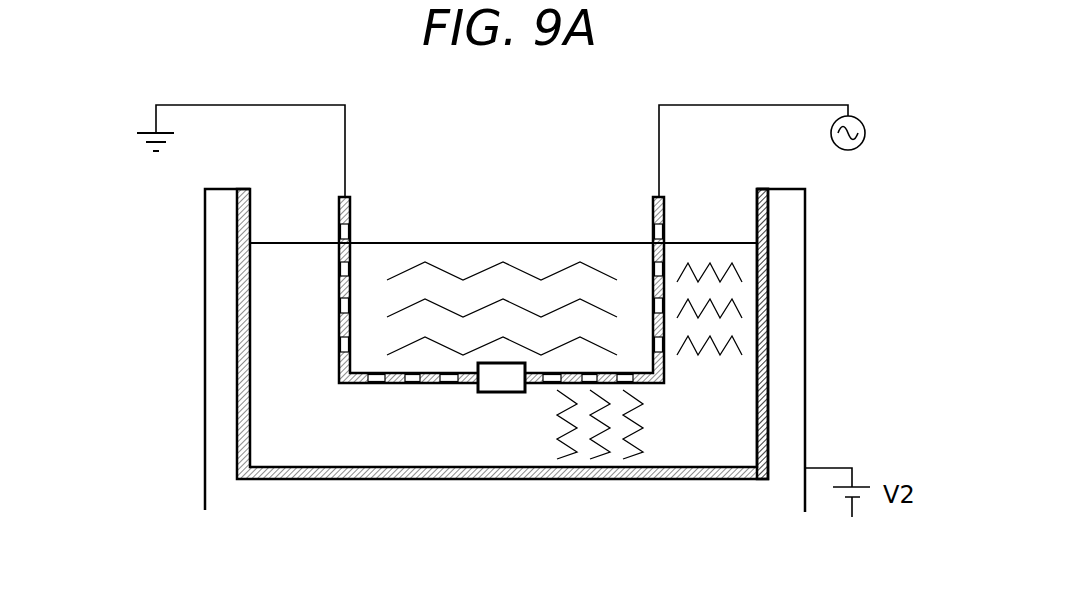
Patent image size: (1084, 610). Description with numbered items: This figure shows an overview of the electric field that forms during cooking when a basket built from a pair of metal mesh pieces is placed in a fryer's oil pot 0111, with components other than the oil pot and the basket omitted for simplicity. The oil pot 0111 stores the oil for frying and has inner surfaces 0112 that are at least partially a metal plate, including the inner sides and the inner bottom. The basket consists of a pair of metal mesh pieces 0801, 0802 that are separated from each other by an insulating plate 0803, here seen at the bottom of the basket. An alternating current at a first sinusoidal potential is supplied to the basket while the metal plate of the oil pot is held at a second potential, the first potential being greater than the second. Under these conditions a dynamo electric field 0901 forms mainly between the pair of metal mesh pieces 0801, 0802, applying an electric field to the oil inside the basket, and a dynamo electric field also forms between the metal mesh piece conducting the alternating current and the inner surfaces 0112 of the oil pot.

The oil pot 0111 is at (205, 236).
The inner surfaces 0112 is at (768, 305).
The metal mesh piece 0801 is at (660, 197).
The metal mesh piece 0802 is at (347, 197).
The insulating plate 0803 is at (510, 381).
The dynamo electric field 0901 is at (403, 343).